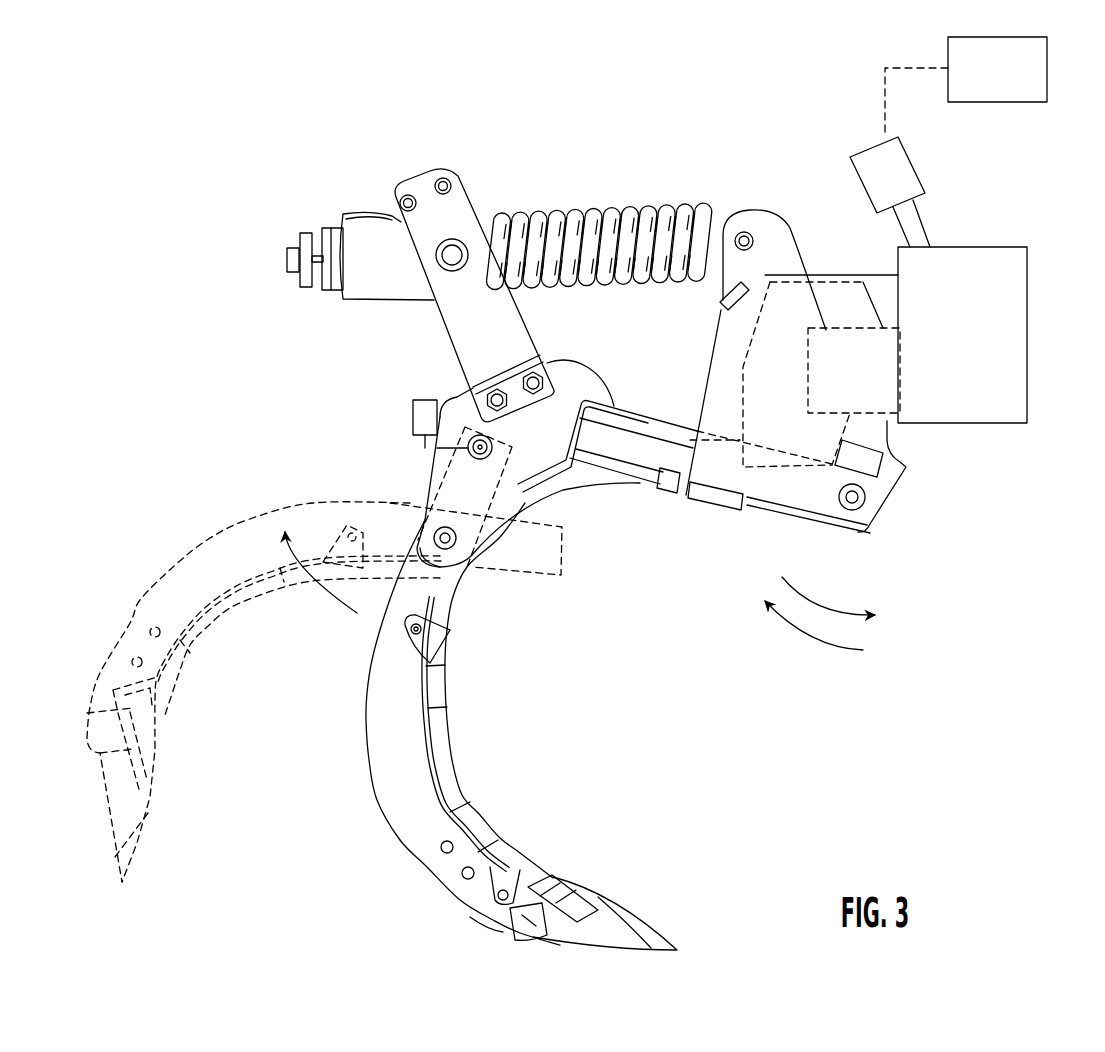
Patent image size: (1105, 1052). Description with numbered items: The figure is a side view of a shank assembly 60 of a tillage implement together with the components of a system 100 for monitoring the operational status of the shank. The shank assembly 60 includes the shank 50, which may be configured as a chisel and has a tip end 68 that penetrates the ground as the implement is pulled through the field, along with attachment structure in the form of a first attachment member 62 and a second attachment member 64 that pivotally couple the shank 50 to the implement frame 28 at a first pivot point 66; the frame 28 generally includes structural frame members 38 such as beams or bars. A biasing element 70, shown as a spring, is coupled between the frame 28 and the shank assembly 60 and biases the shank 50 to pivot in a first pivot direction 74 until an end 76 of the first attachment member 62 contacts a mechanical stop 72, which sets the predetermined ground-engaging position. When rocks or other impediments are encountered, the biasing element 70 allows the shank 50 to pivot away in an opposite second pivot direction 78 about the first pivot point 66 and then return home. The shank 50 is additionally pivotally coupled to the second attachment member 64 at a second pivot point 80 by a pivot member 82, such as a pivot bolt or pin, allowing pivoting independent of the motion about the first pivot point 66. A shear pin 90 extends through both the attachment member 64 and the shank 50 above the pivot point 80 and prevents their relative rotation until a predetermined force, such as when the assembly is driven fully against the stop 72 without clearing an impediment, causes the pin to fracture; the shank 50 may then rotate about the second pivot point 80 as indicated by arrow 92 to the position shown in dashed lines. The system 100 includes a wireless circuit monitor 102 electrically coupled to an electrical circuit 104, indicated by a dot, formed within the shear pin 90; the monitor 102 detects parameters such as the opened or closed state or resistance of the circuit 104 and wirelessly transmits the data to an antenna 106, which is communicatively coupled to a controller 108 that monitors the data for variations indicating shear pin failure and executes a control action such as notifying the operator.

The system 100 is at (195, 137).
The shank assembly 60 is at (186, 356).
The biasing element 70 is at (580, 210).
The second attachment member 64 is at (548, 372).
The shear pin 90 is at (496, 445).
The wireless circuit monitor 102 is at (413, 418).
The second pivot point 80 is at (447, 530).
The pivot member 82 is at (428, 561).
The electrical circuit 104 is at (523, 503).
The first attachment member 62 is at (667, 488).
The mechanical stop 72 is at (900, 462).
The first pivot point 66 is at (850, 505).
The first pivot direction 74 is at (842, 610).
The end of the first attachment member 76 is at (921, 507).
The second pivot direction 78 is at (804, 643).
The shank 50 is at (232, 523).
The arrow indicating rotation about the second pivot point 92 is at (318, 595).
The tip end 68 is at (690, 946).
The frame 28 is at (998, 218).
The structural frame members 38 is at (1017, 283).
The antenna 106 is at (872, 176).
The controller 108 is at (982, 85).